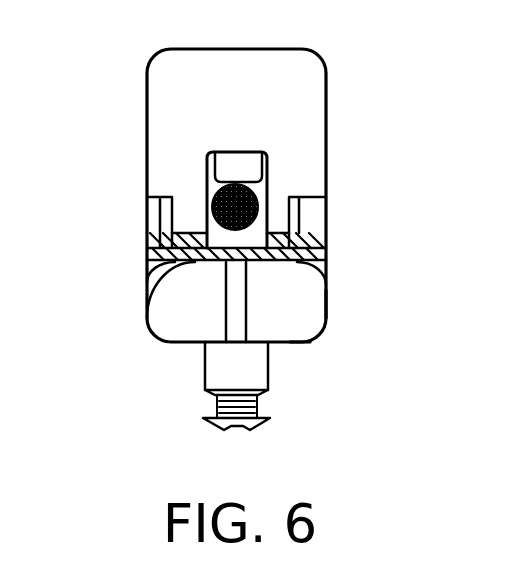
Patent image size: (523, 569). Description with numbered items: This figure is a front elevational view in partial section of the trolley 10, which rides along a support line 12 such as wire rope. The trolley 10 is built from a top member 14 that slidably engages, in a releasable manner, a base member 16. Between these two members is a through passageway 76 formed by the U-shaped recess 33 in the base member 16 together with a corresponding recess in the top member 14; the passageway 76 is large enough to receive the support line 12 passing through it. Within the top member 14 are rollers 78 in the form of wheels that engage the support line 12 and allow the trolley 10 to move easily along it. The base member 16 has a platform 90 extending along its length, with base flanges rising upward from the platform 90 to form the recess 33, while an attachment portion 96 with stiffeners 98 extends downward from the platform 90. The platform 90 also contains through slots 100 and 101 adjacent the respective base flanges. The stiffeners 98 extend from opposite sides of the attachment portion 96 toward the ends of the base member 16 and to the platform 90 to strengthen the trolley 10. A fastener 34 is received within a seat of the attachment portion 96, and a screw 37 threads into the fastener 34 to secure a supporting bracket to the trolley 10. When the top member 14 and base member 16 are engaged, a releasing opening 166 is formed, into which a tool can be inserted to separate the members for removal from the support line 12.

The trolley 10 is at (115, 58).
The top member 14 is at (328, 52).
The support line 12 is at (207, 190).
The rollers 78 is at (238, 156).
The through passageway 76 is at (272, 181).
The U-shaped recess 33 is at (207, 232).
The releasing opening 166 is at (300, 210).
The through slots 101 is at (147, 282).
The through slots 100 is at (326, 285).
The platform 90 is at (147, 318).
The attachment portion 96 is at (329, 326).
The base member 16 is at (327, 347).
The fastener 34 is at (202, 363).
The screw 37 is at (218, 406).
The stiffeners 98 is at (247, 323).